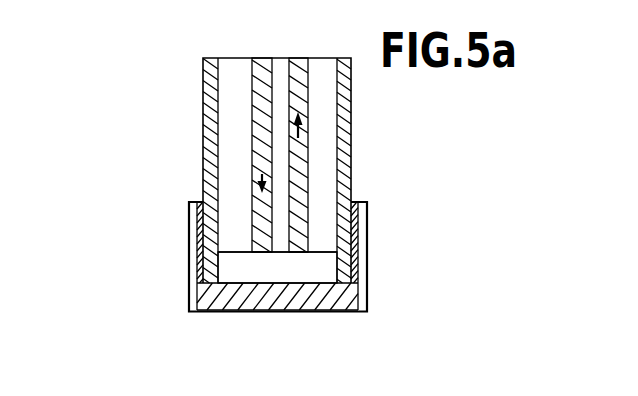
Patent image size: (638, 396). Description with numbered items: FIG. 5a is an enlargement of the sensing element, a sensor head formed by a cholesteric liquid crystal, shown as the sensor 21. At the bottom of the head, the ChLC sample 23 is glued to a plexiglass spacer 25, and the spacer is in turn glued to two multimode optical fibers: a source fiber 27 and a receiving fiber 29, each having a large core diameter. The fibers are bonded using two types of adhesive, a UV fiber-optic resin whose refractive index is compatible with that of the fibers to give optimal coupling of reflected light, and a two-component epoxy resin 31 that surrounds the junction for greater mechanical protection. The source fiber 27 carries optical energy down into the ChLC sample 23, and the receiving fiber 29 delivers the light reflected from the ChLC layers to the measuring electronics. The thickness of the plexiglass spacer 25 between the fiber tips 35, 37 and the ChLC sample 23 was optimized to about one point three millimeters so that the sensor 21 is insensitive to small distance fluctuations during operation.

The sensor 21 is at (176, 129).
The ChLC sample 23 is at (294, 302).
The plexiglass spacer 25 is at (218, 267).
The source fiber 27 is at (262, 58).
The receiving fiber 29 is at (300, 58).
The two-component epoxy resin 31 is at (198, 203).
The fiber tip 35 is at (266, 247).
The fiber tip 37 is at (299, 246).